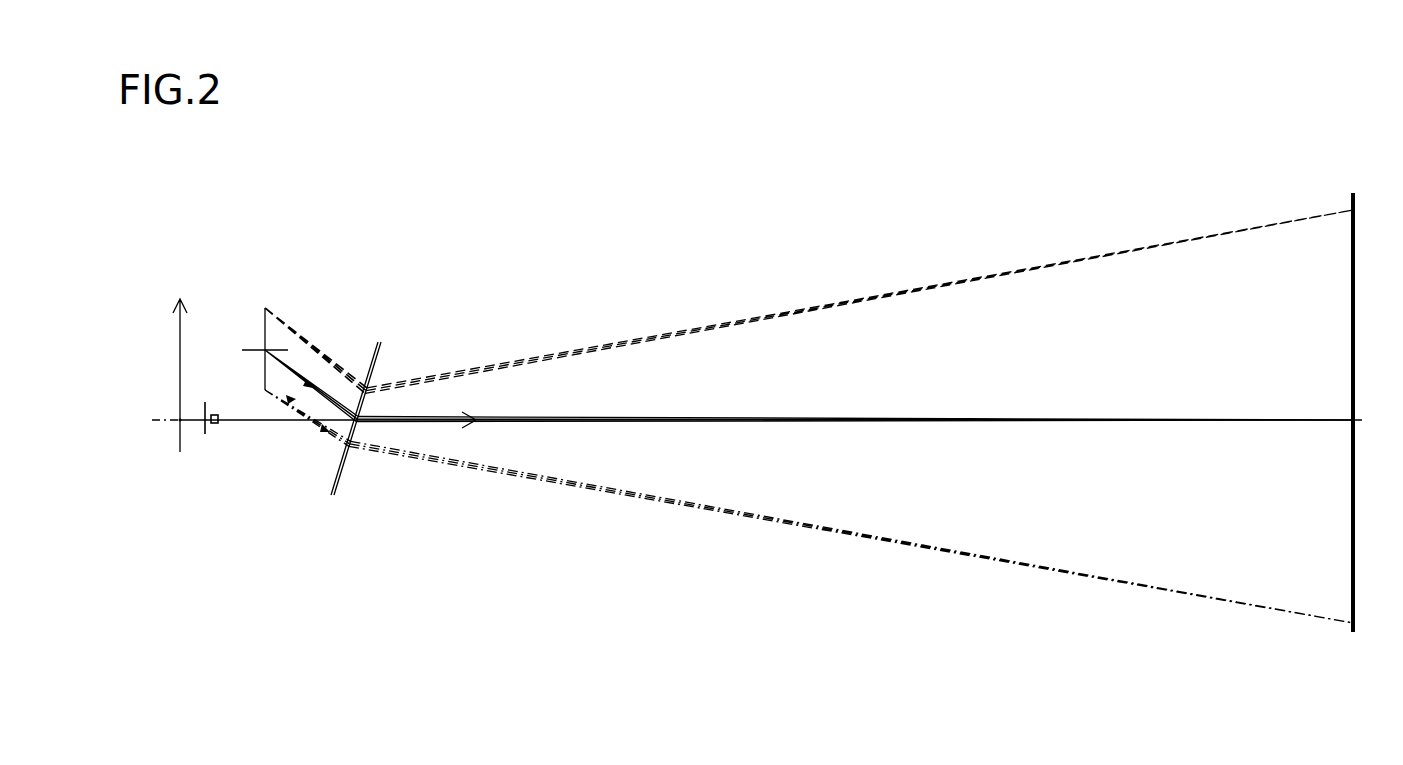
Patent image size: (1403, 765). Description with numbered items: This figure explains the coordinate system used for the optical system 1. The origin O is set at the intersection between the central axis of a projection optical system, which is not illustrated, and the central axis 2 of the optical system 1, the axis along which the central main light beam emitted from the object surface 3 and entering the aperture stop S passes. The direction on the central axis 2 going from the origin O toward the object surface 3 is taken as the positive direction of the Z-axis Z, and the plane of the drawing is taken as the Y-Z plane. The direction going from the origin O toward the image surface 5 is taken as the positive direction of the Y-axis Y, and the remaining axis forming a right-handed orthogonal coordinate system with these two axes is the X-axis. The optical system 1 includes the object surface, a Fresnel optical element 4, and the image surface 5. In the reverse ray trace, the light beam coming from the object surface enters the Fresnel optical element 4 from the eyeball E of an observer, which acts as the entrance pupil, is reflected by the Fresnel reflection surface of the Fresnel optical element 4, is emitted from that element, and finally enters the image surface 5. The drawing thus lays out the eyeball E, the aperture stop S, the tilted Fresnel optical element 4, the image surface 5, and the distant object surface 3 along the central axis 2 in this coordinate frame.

The optical system 1 is at (914, 179).
The central axis 2 is at (155, 421).
The object surface 3 is at (1356, 610).
The Fresnel optical element 4 is at (338, 494).
The image surface 5 is at (265, 310).
The eyeball E is at (199, 428).
The aperture stop S is at (205, 436).
The origin O is at (180, 418).
The Y-axis Y is at (169, 363).
The Z-axis Z is at (771, 433).